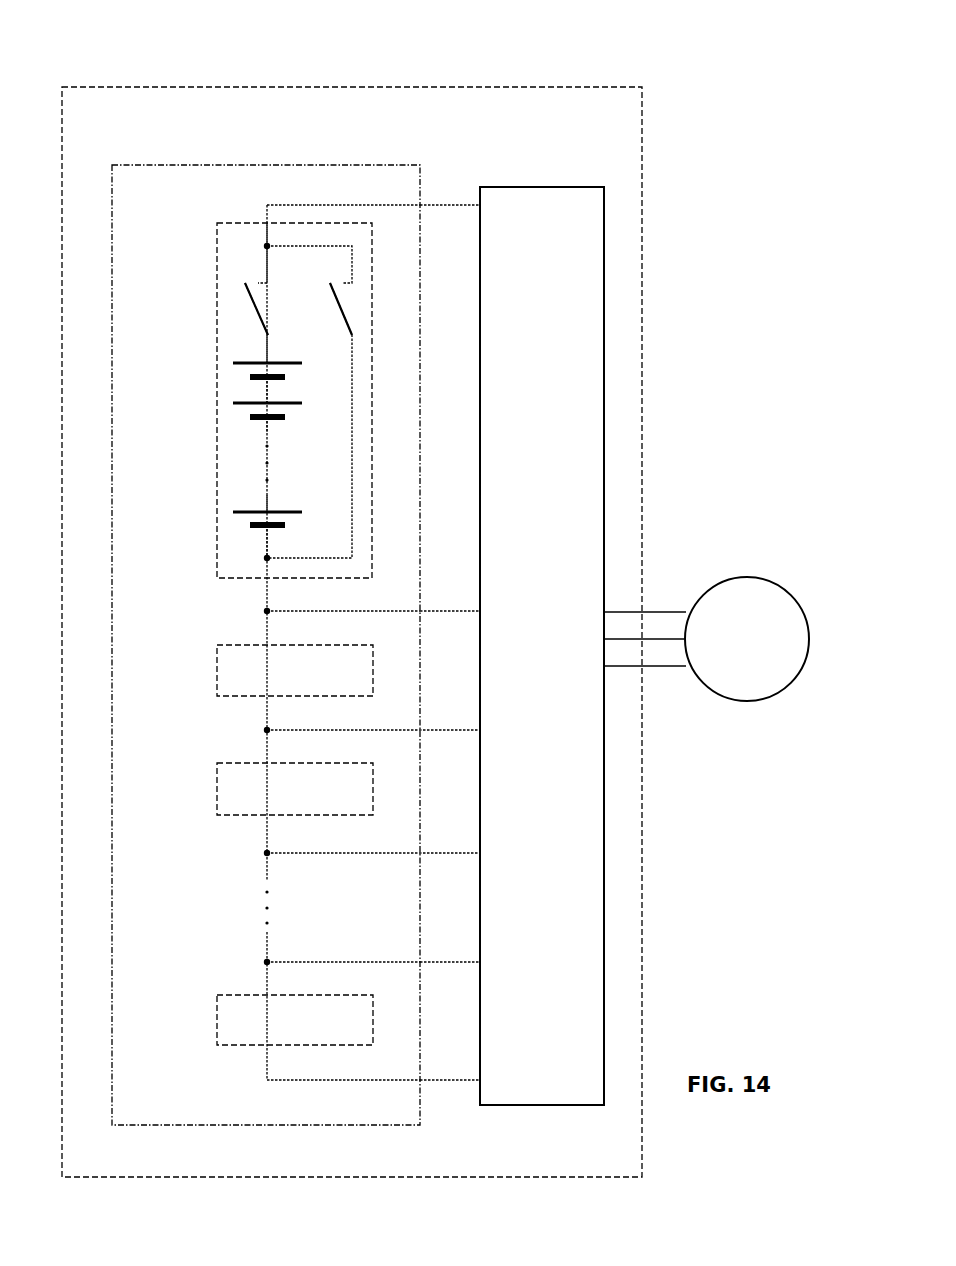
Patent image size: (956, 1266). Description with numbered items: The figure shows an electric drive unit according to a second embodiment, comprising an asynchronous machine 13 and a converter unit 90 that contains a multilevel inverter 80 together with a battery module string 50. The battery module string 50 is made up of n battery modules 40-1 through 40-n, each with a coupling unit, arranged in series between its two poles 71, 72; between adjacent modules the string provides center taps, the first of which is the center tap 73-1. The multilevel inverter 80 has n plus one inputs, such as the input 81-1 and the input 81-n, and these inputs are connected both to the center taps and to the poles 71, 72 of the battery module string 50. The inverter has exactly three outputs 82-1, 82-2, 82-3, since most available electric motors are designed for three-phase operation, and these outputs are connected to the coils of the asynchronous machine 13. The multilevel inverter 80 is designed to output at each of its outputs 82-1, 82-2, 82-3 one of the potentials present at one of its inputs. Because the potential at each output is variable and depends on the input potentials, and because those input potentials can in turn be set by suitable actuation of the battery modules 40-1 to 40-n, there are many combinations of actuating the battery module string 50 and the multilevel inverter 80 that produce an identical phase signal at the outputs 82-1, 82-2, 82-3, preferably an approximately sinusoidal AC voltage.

The converter unit 90 is at (183, 87).
The battery module string 50 is at (305, 165).
The multilevel inverter 80 is at (552, 187).
The asynchronous machine 13 is at (748, 577).
The pole 72 is at (267, 205).
The pole 71 is at (267, 1080).
The battery module 40-n is at (217, 265).
The battery module 40-1 is at (217, 1022).
The center tap 73-1 is at (267, 962).
The input 81-n is at (443, 611).
The input 81-1 is at (445, 1080).
The output 82-1 is at (652, 668).
The output 82-2 is at (628, 639).
The output 82-3 is at (655, 612).